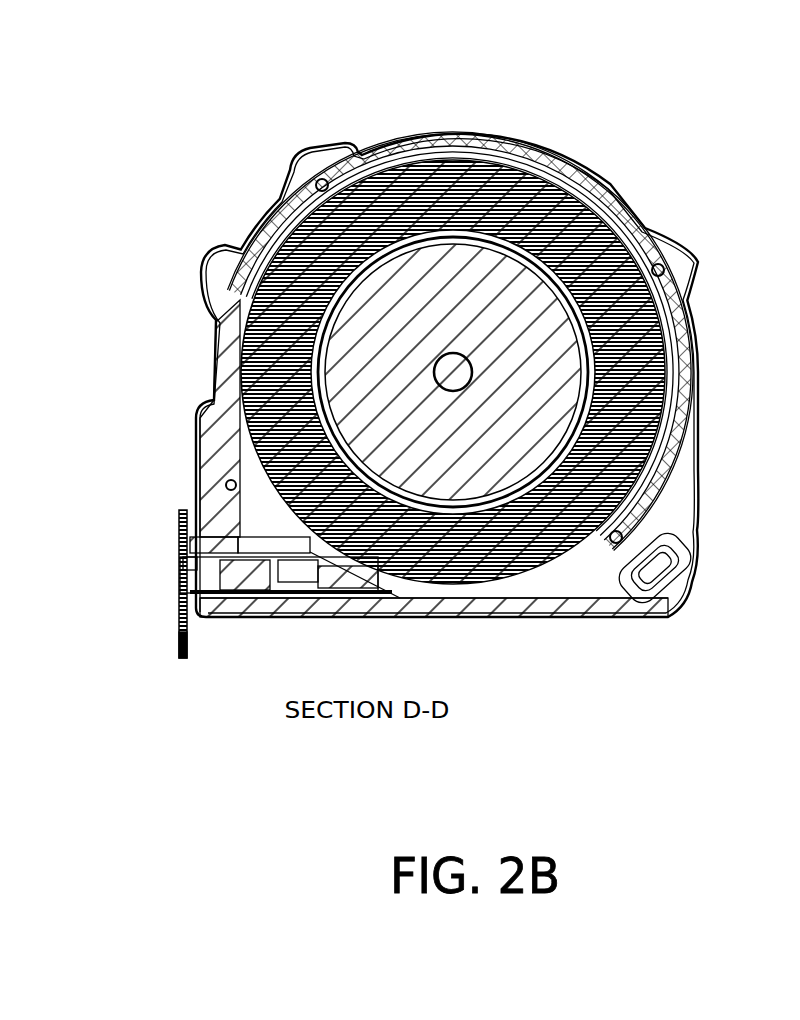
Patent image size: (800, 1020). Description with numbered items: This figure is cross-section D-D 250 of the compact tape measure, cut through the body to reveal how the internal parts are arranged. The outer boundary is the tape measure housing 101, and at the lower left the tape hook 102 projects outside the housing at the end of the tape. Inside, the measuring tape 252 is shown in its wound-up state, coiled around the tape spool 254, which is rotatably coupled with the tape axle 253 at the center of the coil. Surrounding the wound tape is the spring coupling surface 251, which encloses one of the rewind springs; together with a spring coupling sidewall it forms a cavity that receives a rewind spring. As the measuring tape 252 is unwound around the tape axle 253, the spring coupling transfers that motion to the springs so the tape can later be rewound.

The cross-section D-D 250 is at (574, 66).
The tape measure housing 101 is at (620, 192).
The tape hook 102 is at (181, 634).
The spring coupling surface 251 is at (490, 458).
The measuring tape 252 is at (640, 350).
The tape axle 253 is at (444, 369).
The tape spool 254 is at (326, 405).